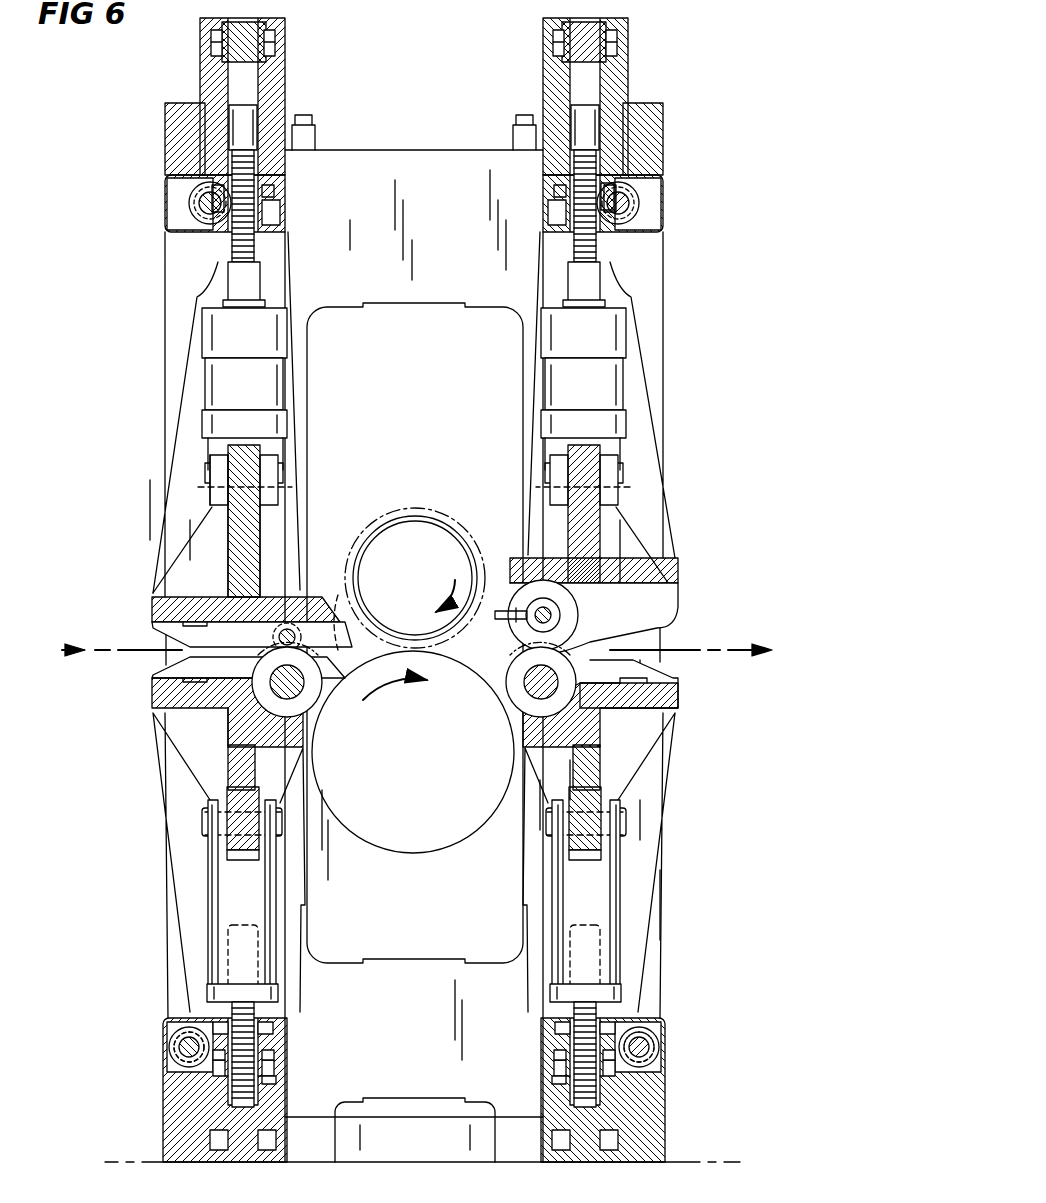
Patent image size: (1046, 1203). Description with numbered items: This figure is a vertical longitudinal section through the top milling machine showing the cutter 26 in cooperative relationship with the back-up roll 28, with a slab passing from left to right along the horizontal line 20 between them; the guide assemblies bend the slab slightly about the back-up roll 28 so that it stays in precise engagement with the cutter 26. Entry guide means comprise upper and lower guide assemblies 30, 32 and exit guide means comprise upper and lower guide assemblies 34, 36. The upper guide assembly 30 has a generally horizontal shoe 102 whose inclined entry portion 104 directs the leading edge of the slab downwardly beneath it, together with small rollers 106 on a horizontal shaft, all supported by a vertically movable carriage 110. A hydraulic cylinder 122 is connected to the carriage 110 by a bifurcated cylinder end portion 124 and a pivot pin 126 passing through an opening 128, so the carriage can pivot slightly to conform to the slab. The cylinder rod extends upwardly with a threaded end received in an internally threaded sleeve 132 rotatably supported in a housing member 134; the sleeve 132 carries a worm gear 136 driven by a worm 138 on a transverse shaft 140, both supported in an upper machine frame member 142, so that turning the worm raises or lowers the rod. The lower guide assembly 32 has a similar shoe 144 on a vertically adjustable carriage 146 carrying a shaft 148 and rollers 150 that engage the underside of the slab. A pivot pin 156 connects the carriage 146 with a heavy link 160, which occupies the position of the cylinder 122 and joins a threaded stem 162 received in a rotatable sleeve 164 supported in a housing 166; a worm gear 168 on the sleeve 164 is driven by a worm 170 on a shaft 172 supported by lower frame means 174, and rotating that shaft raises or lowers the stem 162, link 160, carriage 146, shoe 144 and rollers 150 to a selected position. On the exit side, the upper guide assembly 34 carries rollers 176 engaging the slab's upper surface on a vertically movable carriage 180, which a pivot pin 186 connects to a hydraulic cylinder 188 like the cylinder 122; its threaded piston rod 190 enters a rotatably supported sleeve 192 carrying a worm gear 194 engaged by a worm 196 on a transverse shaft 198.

The horizontal line 20 is at (92, 648).
The cutter 26 is at (415, 522).
The back-up roll 28 is at (410, 852).
The upper guide assembly 30 is at (150, 445).
The lower guide assembly 32 is at (150, 858).
The upper guide assembly 34 is at (690, 438).
The lower guide assembly 36 is at (680, 808).
The shoe 102 is at (236, 646).
The inclined entry portion 104 is at (152, 640).
The small rollers 106 is at (335, 593).
The carriage 110 is at (265, 540).
The hydraulic cylinder 122 is at (283, 382).
The bifurcated cylinder end portion 124 is at (262, 455).
The pivot pin 126 is at (285, 476).
The opening 128 is at (240, 522).
The sleeve 132 is at (262, 165).
The housing member 134 is at (290, 85).
The worm gear 136 is at (272, 220).
The worm 138 is at (178, 230).
The shaft 140 is at (188, 205).
The upper machine frame member 142 is at (172, 128).
The shoe 144 is at (170, 678).
The carriage 146 is at (228, 760).
The shaft 148 is at (292, 702).
The rollers 150 is at (395, 681).
The pivot pin 156 is at (270, 836).
The heavy link 160 is at (258, 896).
The threaded stem 162 is at (250, 1004).
The sleeve 164 is at (272, 1070).
The housing 166 is at (258, 1088).
The worm gear 168 is at (258, 1028).
The worm 170 is at (165, 1040).
The shaft 172 is at (192, 1048).
The lower frame means 174 is at (168, 1082).
The rollers 176 is at (575, 620).
The carriage 180 is at (580, 540).
The pivot pin 186 is at (620, 478).
The hydraulic cylinder 188 is at (620, 380).
The threaded piston rod 190 is at (650, 282).
The sleeve 192 is at (280, 62).
The worm gear 194 is at (620, 232).
The worm 196 is at (640, 205).
The transverse shaft 198 is at (655, 192).